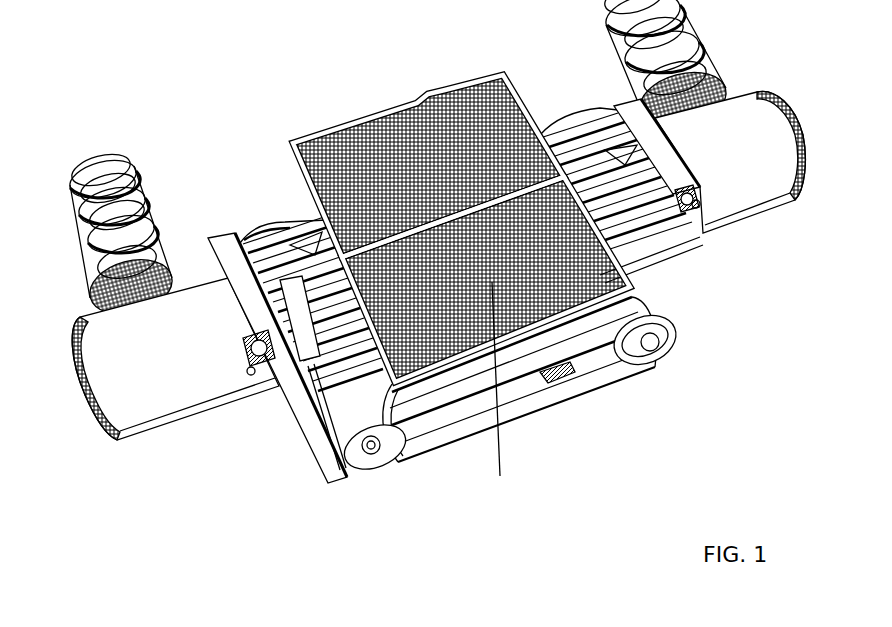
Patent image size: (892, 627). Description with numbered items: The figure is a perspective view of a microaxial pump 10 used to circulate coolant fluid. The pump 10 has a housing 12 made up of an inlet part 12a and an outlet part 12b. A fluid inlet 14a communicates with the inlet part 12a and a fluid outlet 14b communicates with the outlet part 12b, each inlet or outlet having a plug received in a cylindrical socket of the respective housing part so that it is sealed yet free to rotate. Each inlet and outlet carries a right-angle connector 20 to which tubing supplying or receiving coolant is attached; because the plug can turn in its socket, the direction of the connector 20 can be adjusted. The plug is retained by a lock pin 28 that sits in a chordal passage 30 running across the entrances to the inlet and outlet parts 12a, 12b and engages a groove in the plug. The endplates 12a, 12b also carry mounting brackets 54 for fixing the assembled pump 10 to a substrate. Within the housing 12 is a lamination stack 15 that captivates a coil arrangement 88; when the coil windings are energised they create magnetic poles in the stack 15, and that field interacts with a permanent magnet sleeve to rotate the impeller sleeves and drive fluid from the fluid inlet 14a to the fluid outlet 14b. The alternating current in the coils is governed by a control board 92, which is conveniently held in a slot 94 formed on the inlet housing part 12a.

The pump 10 is at (354, 101).
The housing 12 is at (261, 220).
The inlet part 12a is at (253, 400).
The outlet part 12b is at (687, 253).
The fluid inlet 14a is at (110, 440).
The fluid outlet 14b is at (750, 225).
The lamination stack 15 is at (492, 282).
The right-angle connector 20 is at (118, 172).
The lock pin 28 is at (247, 369).
The chordal passage 30 is at (253, 340).
The mounting bracket 54 is at (375, 457).
The coil arrangement 88 is at (565, 374).
The control board 92 is at (337, 470).
The slot 94 is at (303, 420).